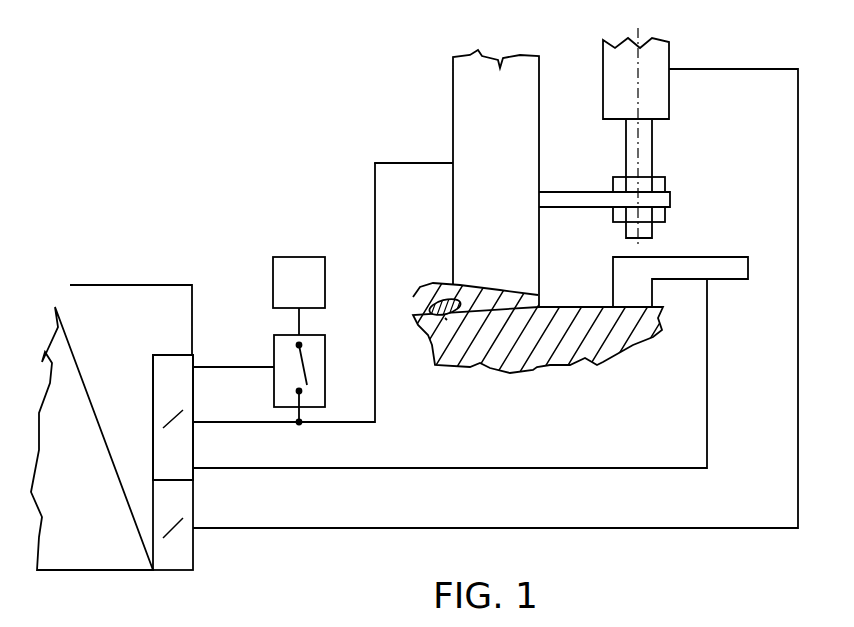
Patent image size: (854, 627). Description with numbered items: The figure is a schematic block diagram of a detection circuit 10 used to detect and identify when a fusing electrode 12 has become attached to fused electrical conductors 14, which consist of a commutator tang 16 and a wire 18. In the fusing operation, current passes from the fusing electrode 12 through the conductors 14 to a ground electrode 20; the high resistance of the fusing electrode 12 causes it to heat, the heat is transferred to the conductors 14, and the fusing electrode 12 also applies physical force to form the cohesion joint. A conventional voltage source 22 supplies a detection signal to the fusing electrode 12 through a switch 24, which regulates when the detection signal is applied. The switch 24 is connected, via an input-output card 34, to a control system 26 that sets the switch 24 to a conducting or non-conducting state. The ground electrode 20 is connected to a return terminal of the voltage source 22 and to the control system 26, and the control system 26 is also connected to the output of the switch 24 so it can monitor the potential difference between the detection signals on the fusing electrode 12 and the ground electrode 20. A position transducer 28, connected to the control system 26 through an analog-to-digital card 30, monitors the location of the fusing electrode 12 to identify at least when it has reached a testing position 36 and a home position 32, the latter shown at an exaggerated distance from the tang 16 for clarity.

The detection circuit 10 is at (246, 272).
The fusing electrode 12 is at (493, 178).
The fused electrical conductors 14 is at (485, 393).
The commutator tang 16 is at (452, 290).
The wire 18 is at (447, 320).
The ground electrode 20 is at (725, 270).
The voltage source 22 is at (293, 272).
The switch 24 is at (312, 345).
The control system 26 is at (92, 276).
The position transducer 28 is at (643, 154).
The analog-to-digital card 30 is at (165, 572).
The home position 32 is at (518, 23).
The input-output card 34 is at (183, 370).
The testing position 36 is at (604, 265).